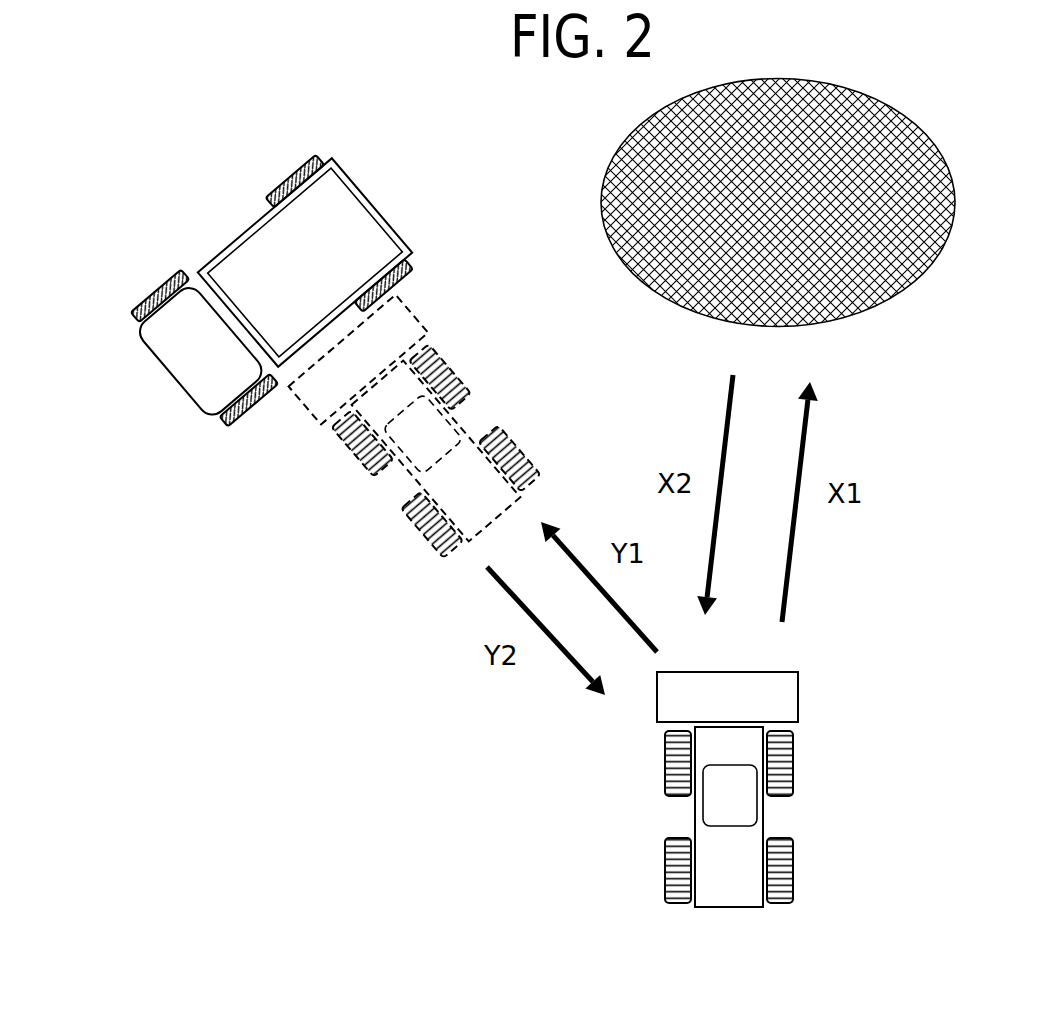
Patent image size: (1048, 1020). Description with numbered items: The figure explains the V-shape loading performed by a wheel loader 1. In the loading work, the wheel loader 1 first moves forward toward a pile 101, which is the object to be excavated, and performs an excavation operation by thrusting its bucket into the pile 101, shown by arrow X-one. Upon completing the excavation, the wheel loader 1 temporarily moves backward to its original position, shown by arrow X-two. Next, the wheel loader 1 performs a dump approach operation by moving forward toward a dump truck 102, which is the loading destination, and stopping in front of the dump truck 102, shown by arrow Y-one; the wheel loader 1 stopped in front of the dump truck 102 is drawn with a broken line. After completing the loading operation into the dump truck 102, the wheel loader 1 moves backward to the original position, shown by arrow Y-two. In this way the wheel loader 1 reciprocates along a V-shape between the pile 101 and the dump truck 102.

The wheel loader 1 is at (353, 502).
The pile 101 is at (928, 140).
The dump truck 102 is at (245, 188).